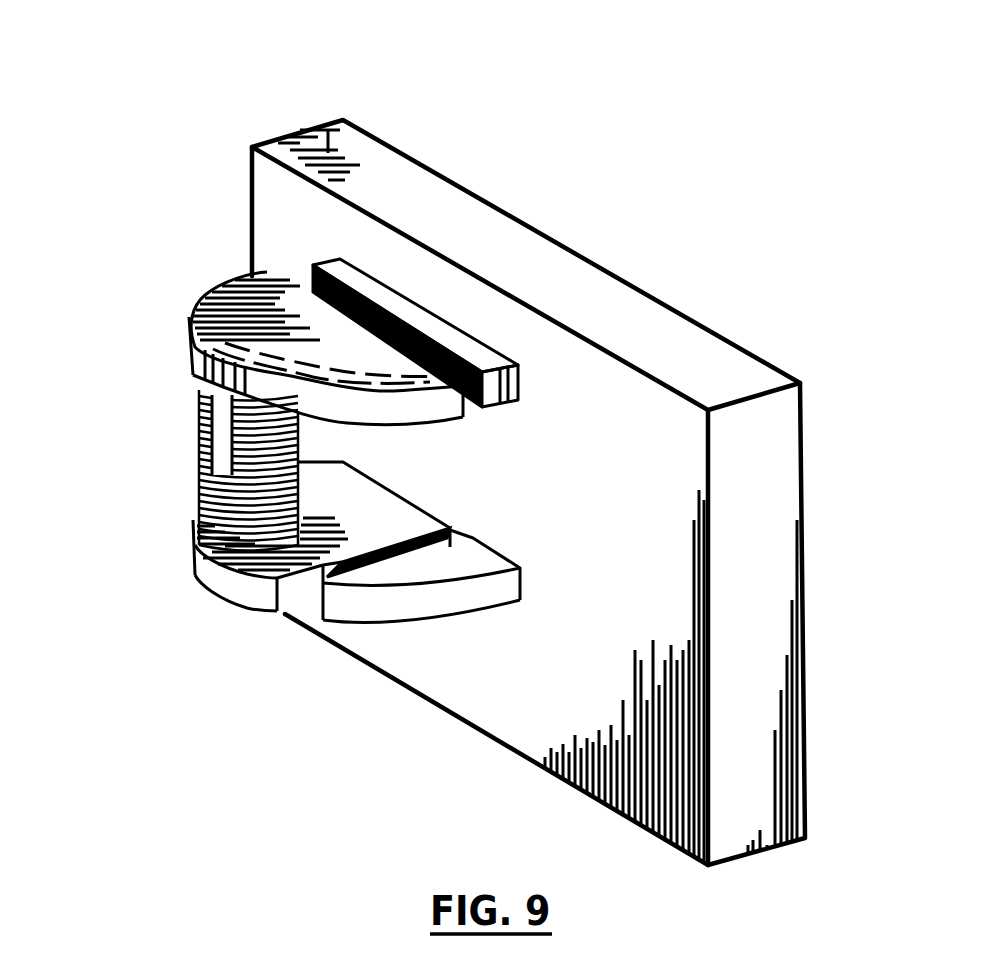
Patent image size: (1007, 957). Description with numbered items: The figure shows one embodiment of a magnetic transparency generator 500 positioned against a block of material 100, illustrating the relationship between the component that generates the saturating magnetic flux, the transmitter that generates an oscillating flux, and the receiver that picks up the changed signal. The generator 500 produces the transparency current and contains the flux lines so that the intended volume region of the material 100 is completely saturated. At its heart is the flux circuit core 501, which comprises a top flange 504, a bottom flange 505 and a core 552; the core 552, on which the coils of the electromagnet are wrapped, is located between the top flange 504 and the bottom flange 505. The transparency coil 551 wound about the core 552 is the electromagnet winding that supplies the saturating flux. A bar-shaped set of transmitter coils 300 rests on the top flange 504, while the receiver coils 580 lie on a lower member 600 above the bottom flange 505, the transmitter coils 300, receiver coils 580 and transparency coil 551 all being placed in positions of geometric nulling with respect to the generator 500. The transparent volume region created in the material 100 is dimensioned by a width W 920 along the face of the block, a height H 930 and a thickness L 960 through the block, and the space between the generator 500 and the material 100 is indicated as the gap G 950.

The material 100 is at (333, 118).
The transmitter coils 300 is at (275, 306).
The magnetic transparency generator 500 is at (292, 434).
The flux circuit core 501 is at (257, 541).
The top flange 504 is at (252, 277).
The bottom flange 505 is at (228, 583).
The transparency coil 551 is at (199, 488).
The core 552 is at (199, 433).
The receiver coils 580 is at (436, 500).
The lower member 600 is at (430, 460).
The width W 920 is at (360, 113).
The height H 930 is at (866, 360).
The gap G 950 is at (648, 587).
The thickness L 960 is at (305, 63).